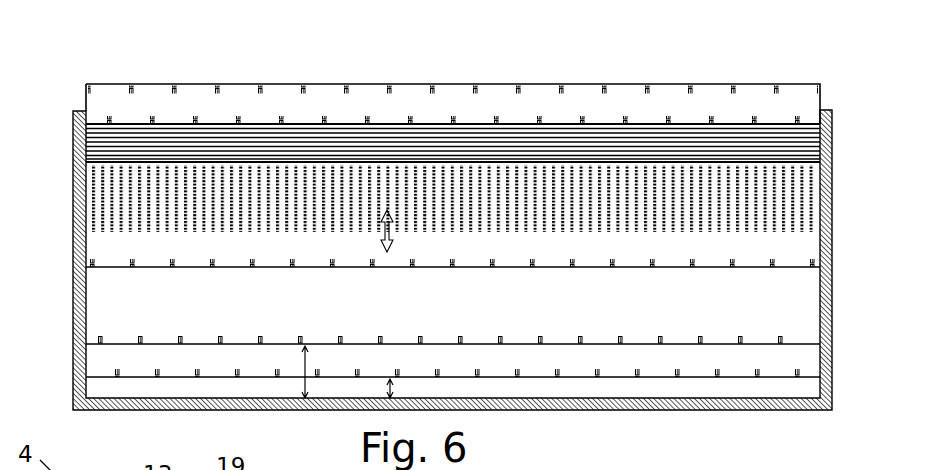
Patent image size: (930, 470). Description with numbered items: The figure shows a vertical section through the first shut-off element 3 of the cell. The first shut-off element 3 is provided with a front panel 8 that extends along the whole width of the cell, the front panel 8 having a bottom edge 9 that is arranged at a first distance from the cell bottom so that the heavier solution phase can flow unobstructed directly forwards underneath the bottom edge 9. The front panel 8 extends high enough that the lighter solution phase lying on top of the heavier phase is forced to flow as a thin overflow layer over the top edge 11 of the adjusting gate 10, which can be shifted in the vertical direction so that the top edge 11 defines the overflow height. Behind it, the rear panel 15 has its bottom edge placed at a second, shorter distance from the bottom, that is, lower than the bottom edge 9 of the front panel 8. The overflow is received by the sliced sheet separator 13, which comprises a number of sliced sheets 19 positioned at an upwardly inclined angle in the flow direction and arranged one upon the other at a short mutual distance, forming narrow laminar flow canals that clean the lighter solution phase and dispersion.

The first shut-off element 3 is at (84, 60).
The sliced sheet separator 13 is at (183, 147).
The sliced sheets 19 is at (246, 130).
The top edge of the adjusting gate 11 is at (150, 161).
The adjusting gate 10 is at (110, 247).
The front panel 8 is at (108, 317).
The rear panel 15 is at (112, 362).
The bottom edge of the front panel 9 is at (238, 345).